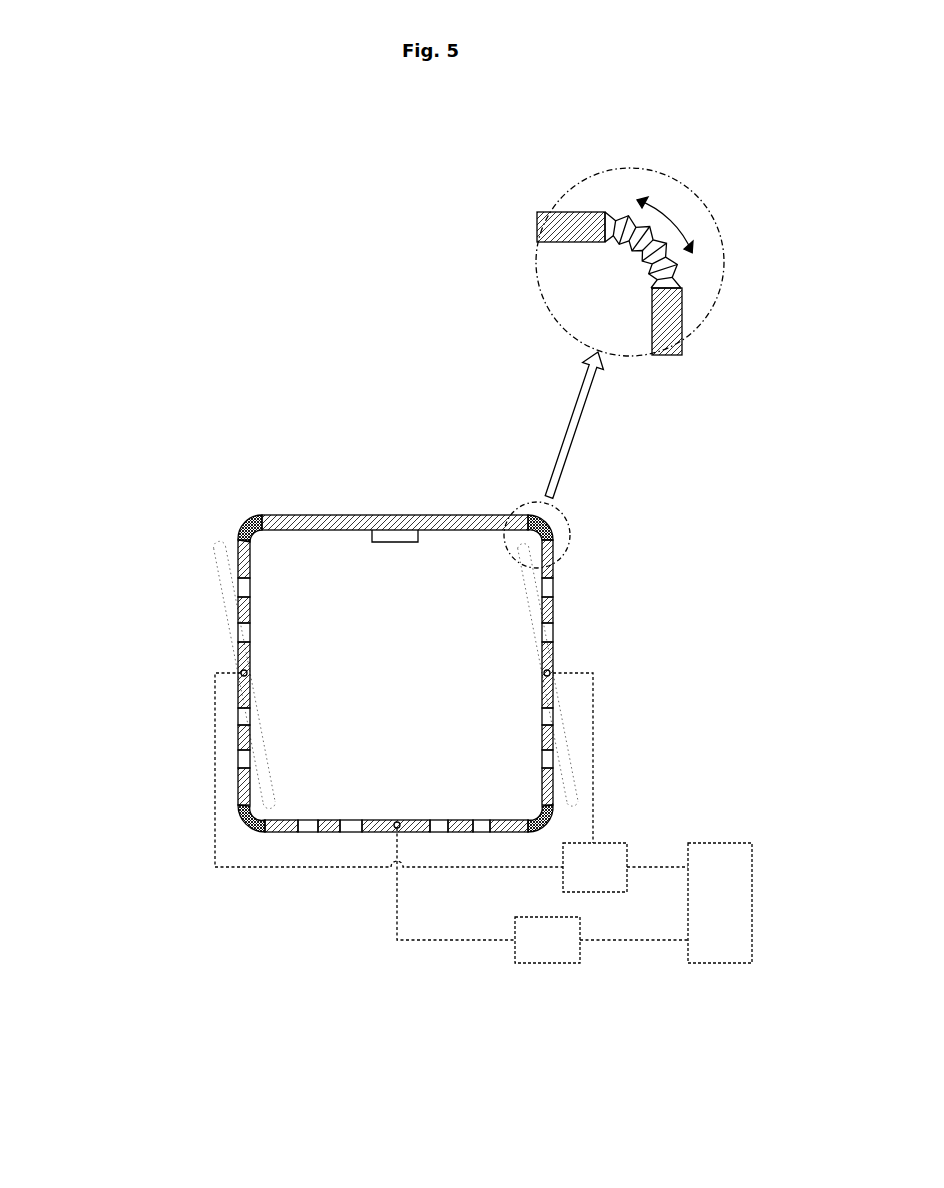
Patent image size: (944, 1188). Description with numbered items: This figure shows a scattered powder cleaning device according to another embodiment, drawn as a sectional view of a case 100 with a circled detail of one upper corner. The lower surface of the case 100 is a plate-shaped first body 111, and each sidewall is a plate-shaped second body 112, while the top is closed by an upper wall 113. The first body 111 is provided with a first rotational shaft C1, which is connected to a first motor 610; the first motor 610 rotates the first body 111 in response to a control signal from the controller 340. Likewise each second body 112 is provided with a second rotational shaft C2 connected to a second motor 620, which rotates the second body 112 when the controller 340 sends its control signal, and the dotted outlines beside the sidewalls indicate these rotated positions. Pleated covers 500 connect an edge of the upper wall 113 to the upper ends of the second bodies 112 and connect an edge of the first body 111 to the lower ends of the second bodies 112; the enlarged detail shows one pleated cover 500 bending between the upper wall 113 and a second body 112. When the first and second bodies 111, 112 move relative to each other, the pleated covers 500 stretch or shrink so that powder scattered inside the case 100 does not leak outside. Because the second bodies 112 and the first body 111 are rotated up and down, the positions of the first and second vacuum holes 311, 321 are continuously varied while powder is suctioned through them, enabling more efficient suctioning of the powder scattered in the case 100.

The case 100 is at (395, 503).
The upper wall 113 is at (338, 514).
The second body 112 is at (240, 549).
The first body 111 is at (278, 833).
The first vacuum hole 311 is at (240, 628).
The second vacuum hole 321 is at (353, 833).
The pleated cover 500 is at (560, 517).
The first rotational shaft C1 is at (399, 828).
The second rotational shaft C2 is at (241, 675).
The first motor 610 is at (545, 964).
The second motor 620 is at (620, 842).
The controller 340 is at (720, 842).